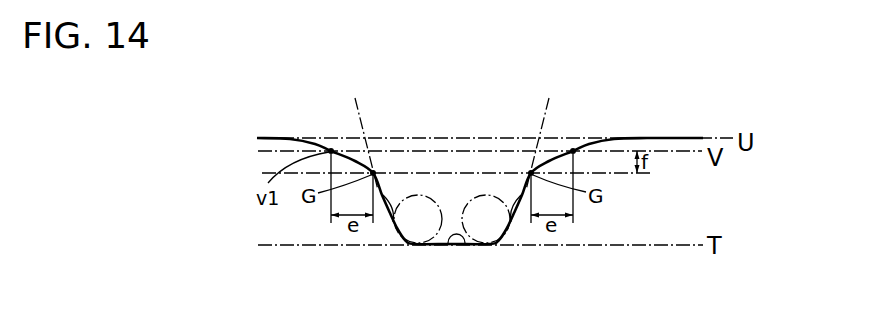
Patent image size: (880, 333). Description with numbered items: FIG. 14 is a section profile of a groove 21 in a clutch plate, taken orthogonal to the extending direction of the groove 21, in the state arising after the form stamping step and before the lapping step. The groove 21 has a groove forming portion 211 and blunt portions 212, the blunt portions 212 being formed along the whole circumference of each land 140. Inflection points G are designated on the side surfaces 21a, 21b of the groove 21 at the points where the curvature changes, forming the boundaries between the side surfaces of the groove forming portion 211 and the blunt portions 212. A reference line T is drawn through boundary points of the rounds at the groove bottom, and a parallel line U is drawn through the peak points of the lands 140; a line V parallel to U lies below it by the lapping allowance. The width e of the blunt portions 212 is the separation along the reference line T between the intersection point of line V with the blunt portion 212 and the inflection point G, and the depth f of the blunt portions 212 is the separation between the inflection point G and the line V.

The land 140 is at (274, 136).
The groove 21 is at (454, 113).
The blunt portions 212 is at (353, 153).
The one side surface 21a is at (393, 222).
The other side surface 21b is at (511, 222).
The groove forming portion 211 is at (466, 245).